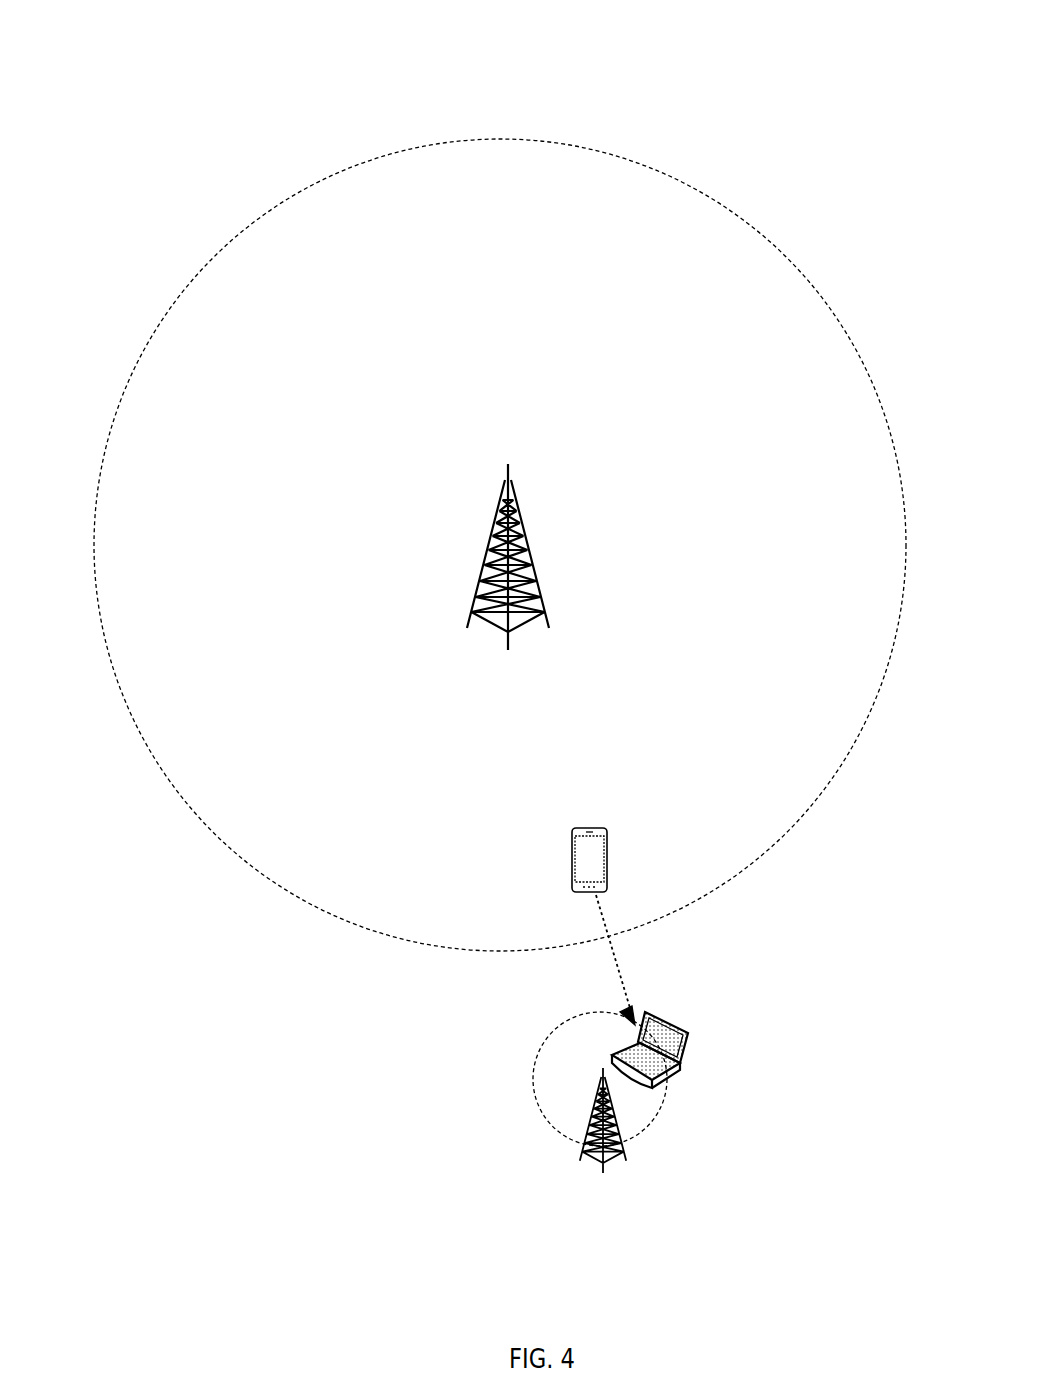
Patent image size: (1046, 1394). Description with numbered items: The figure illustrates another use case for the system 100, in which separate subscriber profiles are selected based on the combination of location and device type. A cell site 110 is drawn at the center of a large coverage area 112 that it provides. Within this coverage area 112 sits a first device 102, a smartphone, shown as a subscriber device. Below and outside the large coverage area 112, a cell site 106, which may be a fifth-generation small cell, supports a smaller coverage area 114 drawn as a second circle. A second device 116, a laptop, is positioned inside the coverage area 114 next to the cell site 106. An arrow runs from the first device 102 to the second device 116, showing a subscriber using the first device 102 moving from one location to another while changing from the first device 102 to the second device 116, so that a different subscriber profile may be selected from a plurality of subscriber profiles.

The system 100 is at (578, 41).
The subscriber device 102 is at (608, 850).
The cell site 106 is at (596, 1165).
The cell site 110 is at (494, 540).
The coverage area 112 is at (670, 175).
The coverage area 114 is at (533, 1098).
The second device 116 is at (672, 1025).